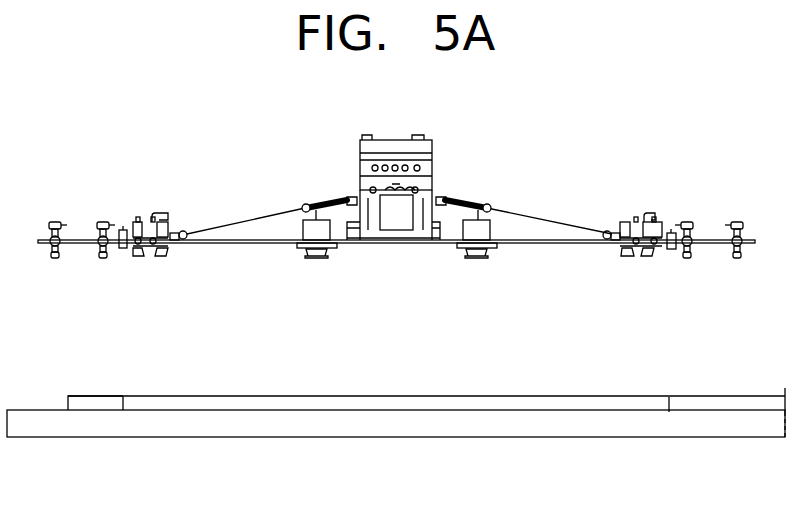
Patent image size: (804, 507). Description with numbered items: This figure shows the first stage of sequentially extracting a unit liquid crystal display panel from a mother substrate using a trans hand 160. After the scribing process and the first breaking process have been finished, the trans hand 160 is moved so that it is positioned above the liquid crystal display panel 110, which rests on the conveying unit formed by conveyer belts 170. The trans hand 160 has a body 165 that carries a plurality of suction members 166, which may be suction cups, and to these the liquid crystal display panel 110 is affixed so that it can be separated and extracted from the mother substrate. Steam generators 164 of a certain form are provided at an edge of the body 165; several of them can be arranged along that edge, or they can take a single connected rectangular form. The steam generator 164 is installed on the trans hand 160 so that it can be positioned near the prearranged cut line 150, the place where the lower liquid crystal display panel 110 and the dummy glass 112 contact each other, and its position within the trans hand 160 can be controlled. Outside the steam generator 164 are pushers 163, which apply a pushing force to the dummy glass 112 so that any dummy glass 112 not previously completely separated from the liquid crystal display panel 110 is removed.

The liquid crystal display panel 110 is at (270, 406).
The dummy glass 112 is at (93, 406).
The prearranged cut line 150 is at (124, 398).
The conveyer belts 170 is at (200, 432).
The trans hand 160 is at (452, 153).
The pushers 163 is at (745, 218).
The steam generators 164 is at (672, 250).
The body 165 is at (575, 246).
The suction members 166 is at (637, 252).